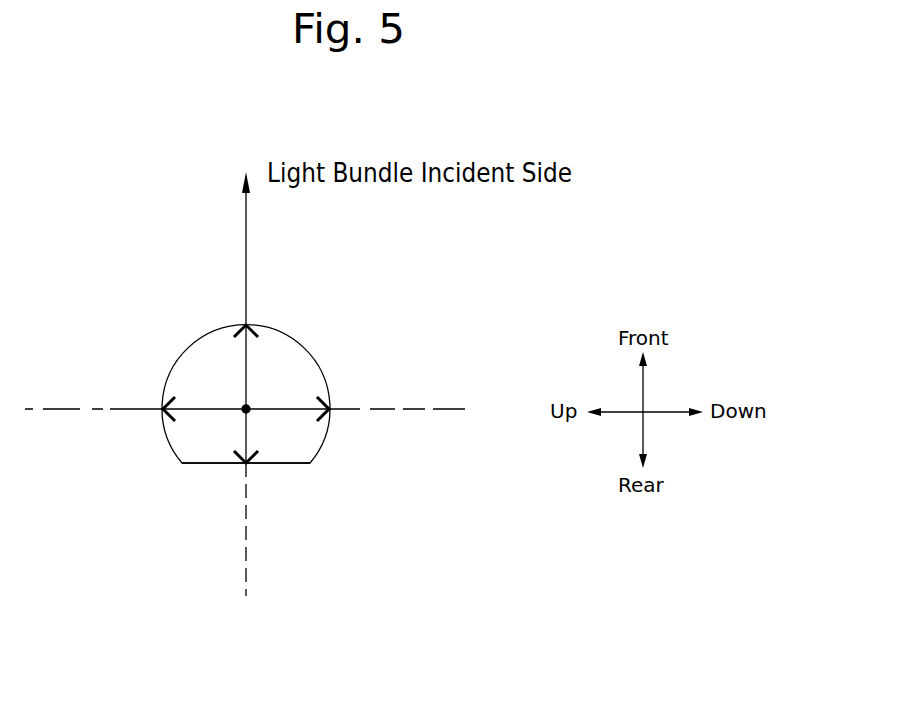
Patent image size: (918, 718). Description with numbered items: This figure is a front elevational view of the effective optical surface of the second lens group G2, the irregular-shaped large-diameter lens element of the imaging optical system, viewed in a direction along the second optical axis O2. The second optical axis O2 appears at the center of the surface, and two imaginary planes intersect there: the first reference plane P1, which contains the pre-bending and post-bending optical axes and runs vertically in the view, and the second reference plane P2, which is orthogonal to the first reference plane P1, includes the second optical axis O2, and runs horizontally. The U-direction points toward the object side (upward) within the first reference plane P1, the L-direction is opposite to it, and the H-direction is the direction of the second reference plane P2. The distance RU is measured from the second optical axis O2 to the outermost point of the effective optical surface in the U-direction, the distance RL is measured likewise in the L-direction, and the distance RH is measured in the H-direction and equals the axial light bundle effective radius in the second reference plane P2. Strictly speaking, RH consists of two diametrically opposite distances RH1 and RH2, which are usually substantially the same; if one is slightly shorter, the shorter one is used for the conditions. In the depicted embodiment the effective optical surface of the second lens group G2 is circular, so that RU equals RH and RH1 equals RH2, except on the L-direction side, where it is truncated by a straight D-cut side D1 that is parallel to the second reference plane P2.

The second lens group G2 is at (224, 314).
The first reference plane P1 is at (247, 565).
The second reference plane P2 is at (433, 409).
The distance in the U-direction RU is at (246, 368).
The first distance in the H-direction RH1 is at (207, 409).
The distance in the H-direction RH is at (348, 440).
The second distance in the H-direction RH2 is at (268, 412).
The distance in the L-direction RL is at (246, 433).
The second optical axis O2 is at (247, 408).
The D-cut side D1 is at (215, 463).